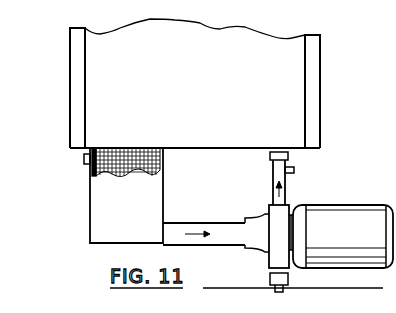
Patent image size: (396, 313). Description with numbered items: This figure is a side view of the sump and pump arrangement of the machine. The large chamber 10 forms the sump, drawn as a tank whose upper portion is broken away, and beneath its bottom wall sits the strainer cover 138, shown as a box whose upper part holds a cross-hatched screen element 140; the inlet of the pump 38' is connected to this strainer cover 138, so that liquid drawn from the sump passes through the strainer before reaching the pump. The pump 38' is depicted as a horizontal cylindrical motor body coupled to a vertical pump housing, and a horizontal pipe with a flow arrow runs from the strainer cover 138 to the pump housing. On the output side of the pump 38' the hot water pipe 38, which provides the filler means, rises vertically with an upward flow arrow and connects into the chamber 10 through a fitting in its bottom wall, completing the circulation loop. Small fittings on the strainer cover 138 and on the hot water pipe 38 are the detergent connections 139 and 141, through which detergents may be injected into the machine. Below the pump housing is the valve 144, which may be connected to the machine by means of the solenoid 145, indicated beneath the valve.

The chamber 10 is at (293, 126).
The hot water pipe 38 is at (255, 178).
The pump 38' is at (341, 225).
The strainer cover 138 is at (90, 172).
The detergent connection 139 is at (84, 158).
The filter screen 140 is at (152, 147).
The detergent connection 141 is at (296, 170).
The valve 144 is at (290, 282).
The solenoid 145 is at (277, 292).